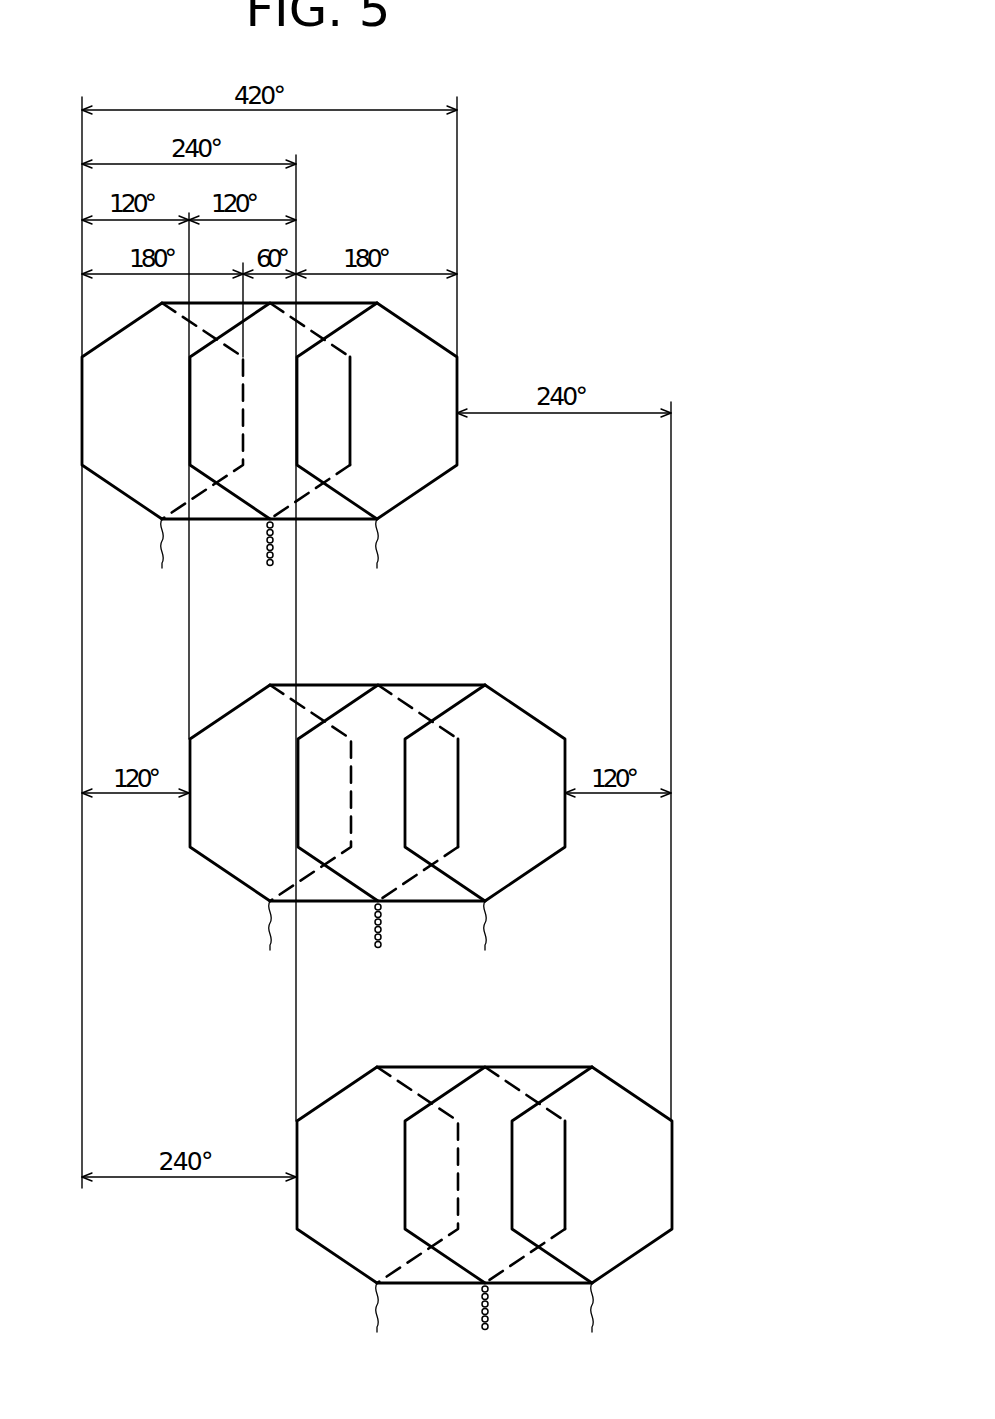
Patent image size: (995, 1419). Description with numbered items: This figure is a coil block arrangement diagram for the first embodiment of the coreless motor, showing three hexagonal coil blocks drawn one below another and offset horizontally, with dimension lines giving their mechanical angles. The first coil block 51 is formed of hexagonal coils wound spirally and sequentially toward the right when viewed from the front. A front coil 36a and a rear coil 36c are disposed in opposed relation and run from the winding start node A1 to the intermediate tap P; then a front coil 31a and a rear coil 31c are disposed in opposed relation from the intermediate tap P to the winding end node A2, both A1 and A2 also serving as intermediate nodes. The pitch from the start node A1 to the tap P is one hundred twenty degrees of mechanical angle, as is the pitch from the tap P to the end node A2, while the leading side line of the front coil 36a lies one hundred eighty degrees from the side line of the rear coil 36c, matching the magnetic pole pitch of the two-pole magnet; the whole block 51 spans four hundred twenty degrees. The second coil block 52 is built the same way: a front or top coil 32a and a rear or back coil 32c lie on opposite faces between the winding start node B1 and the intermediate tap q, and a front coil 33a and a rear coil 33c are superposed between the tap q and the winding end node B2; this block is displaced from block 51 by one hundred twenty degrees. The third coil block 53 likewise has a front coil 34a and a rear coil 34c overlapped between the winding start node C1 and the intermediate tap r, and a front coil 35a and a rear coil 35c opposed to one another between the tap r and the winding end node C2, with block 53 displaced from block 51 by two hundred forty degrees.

The coil block 51 is at (242, 451).
The coil block 52 is at (354, 834).
The coil block 53 is at (464, 1216).
The front coil 36a is at (118, 493).
The rear coil 36c is at (198, 497).
The front coil 31a is at (340, 498).
The rear coil 31c is at (418, 495).
The front coil 32a is at (232, 878).
The rear coil 32c is at (303, 878).
The front coil 33a is at (452, 882).
The rear coil 33c is at (517, 882).
The front coil 34a is at (340, 1263).
The rear coil 34c is at (410, 1263).
The front coil 35a is at (558, 1265).
The rear coil 35c is at (628, 1265).
The winding start node A1 is at (162, 559).
The intermediate tap P is at (270, 561).
The winding end node A2 is at (377, 559).
The winding start node B1 is at (270, 942).
The intermediate tap q is at (378, 944).
The winding end node B2 is at (485, 942).
The winding start node C1 is at (377, 1324).
The intermediate tap r is at (485, 1326).
The winding end node C2 is at (592, 1324).